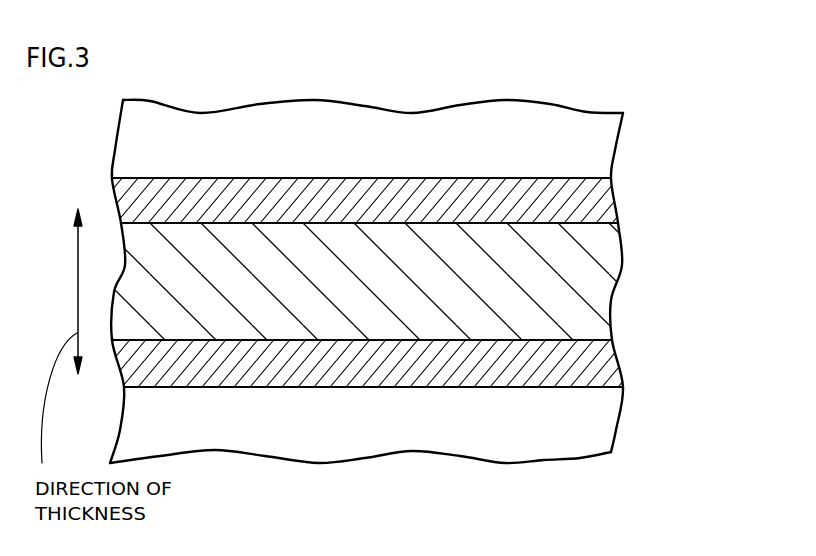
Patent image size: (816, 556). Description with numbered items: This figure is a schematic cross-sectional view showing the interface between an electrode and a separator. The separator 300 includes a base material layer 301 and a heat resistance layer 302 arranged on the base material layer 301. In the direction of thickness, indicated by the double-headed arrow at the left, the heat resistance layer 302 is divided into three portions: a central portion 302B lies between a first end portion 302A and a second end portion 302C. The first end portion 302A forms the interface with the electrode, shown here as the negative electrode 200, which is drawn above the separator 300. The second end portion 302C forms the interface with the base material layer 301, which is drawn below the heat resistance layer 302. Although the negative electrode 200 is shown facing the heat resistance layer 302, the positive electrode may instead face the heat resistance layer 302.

The negative electrode 200 is at (576, 151).
The separator 300 is at (438, 320).
The base material layer 301 is at (583, 428).
The heat resistance layer 302 is at (414, 291).
The first end portion 302A is at (595, 201).
The central portion 302B is at (593, 286).
The second end portion 302C is at (593, 367).